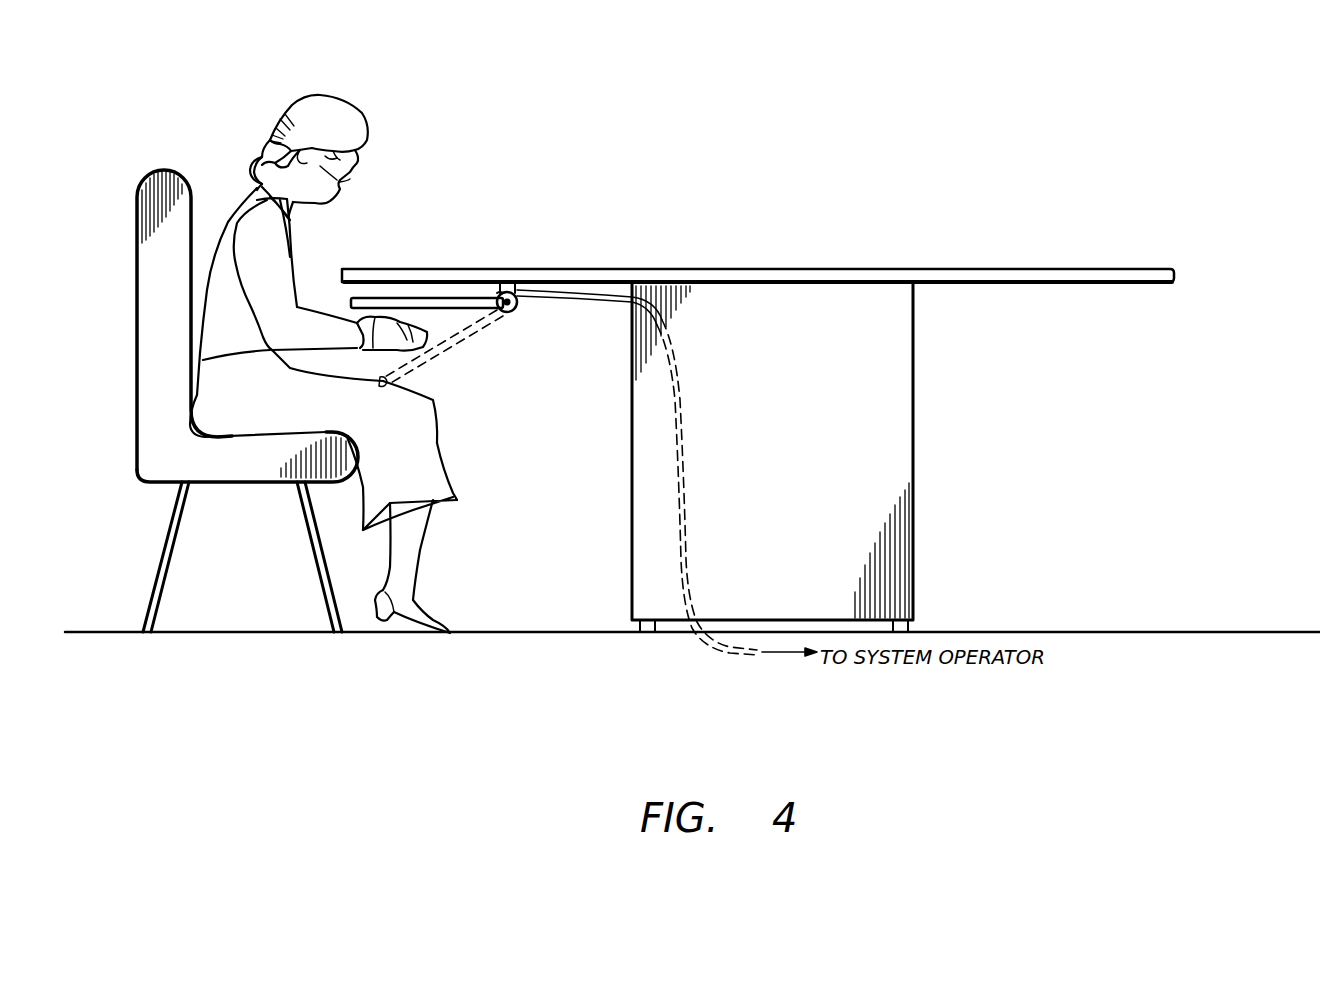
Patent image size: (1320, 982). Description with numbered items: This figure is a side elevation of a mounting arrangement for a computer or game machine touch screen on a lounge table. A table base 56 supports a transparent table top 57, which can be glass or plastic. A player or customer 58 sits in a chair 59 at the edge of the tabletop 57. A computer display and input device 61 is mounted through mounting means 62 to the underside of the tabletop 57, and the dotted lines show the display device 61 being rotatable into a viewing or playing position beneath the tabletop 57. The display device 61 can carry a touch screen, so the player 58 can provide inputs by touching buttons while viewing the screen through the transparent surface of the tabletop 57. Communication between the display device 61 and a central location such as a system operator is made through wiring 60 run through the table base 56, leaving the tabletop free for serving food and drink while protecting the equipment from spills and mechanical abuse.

The table base 56 is at (917, 357).
The table top 57 is at (900, 267).
The player 58 is at (334, 98).
The chair 59 is at (136, 363).
The wiring 60 is at (683, 390).
The computer display and input device 61 is at (430, 297).
The mounting means 62 is at (517, 312).